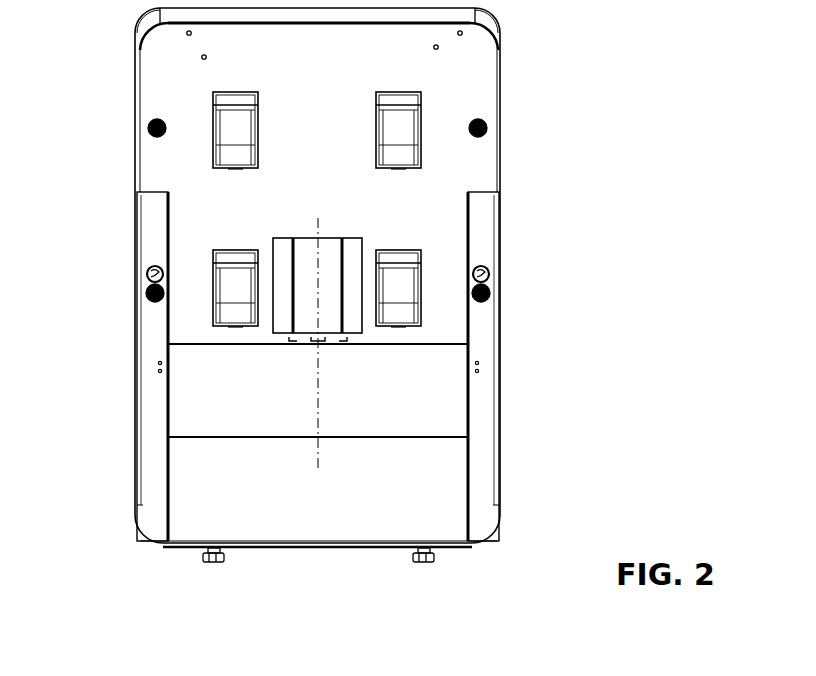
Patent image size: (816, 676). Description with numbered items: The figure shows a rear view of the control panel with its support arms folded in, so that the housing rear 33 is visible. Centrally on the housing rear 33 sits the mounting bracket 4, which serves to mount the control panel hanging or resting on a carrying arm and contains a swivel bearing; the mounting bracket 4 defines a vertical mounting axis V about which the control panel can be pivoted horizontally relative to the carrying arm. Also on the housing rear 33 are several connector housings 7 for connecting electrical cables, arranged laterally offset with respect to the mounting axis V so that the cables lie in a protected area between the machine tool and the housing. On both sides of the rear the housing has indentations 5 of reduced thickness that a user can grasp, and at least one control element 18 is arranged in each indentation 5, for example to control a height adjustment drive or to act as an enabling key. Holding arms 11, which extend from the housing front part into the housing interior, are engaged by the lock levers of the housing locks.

The housing rear 33 is at (331, 89).
The indentation 5 is at (150, 334).
The mounting bracket 4 is at (296, 313).
The vertical mounting axis V is at (315, 455).
The connector housing 7 is at (236, 128).
The holding arm 11 is at (148, 127).
The control element 18 is at (151, 270).